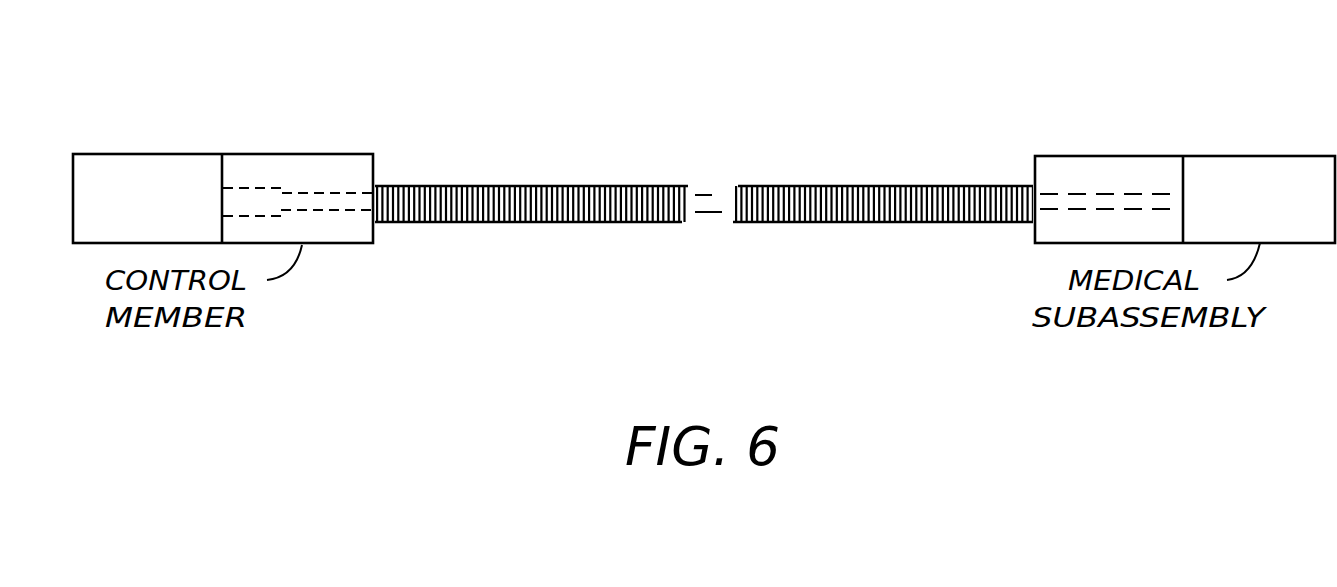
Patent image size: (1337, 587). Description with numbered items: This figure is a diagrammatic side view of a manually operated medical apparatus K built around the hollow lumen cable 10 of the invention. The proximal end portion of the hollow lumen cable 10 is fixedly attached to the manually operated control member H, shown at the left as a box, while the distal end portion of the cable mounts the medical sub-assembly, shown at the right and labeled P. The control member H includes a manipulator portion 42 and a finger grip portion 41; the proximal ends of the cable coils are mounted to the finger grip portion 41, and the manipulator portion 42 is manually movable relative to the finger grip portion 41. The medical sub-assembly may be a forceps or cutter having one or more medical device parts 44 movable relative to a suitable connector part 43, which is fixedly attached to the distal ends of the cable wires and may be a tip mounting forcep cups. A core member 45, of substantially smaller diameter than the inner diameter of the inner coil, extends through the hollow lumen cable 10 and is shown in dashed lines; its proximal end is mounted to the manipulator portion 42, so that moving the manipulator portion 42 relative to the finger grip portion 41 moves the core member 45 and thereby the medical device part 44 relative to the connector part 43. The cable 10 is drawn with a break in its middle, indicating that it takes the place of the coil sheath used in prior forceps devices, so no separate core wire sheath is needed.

The hollow lumen cable 10 is at (765, 222).
The finger grip portion 41 is at (323, 172).
The manipulator portion 42 is at (107, 172).
The suitable connector part 43 is at (1117, 168).
The medical device part 44 is at (1252, 168).
The core member 45 is at (778, 180).
The control member H is at (253, 153).
The medical apparatus K is at (915, 225).
The medical subassembly probe P is at (1062, 168).